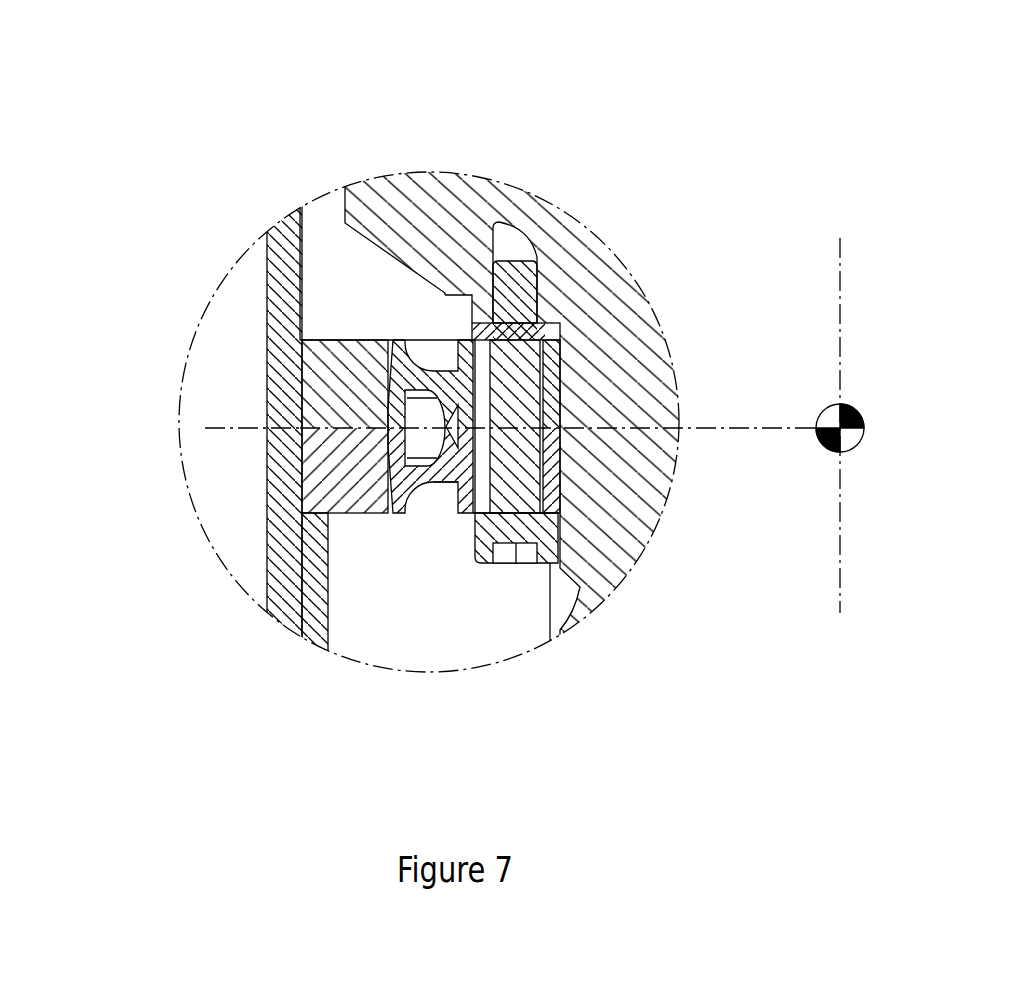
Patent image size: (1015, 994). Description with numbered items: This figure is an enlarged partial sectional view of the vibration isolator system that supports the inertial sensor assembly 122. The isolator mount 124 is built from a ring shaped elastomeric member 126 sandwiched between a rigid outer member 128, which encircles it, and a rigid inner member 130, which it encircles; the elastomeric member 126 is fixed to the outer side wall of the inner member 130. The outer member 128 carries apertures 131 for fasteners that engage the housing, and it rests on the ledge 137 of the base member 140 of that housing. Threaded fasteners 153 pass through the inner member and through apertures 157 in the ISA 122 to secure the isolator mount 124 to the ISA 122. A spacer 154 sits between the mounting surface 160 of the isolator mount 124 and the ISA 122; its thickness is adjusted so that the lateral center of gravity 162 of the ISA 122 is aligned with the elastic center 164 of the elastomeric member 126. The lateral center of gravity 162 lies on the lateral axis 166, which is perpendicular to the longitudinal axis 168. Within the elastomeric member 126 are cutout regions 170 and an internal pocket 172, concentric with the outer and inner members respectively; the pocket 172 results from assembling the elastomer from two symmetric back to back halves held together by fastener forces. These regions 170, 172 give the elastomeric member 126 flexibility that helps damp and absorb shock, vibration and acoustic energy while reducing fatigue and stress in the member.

The inertial sensor assembly 122 is at (640, 370).
The isolator mount 124 is at (358, 302).
The elastomeric member 126 is at (408, 492).
The outer member 128 is at (348, 380).
The inner member 130 is at (503, 326).
The apertures 131 is at (556, 372).
The ledge 137 is at (325, 514).
The base member 140 is at (275, 358).
The threaded fasteners 153 is at (512, 563).
The spacer 154 is at (503, 302).
The apertures 157 is at (502, 235).
The mounting surface 160 is at (470, 312).
The lateral center of gravity 162 is at (857, 412).
The elastic center 164 is at (712, 428).
The lateral axis 166 is at (207, 433).
The longitudinal axis 168 is at (840, 555).
The cutout regions 170 is at (443, 512).
The internal pocket 172 is at (415, 435).